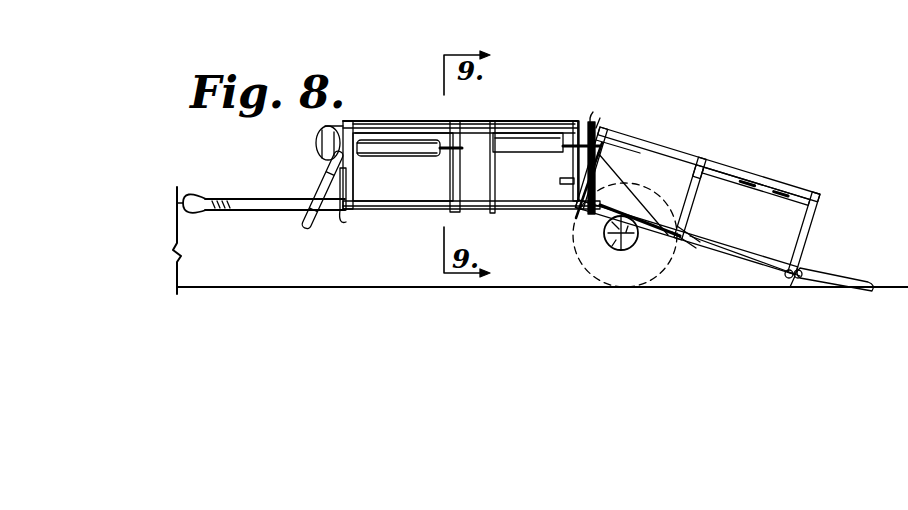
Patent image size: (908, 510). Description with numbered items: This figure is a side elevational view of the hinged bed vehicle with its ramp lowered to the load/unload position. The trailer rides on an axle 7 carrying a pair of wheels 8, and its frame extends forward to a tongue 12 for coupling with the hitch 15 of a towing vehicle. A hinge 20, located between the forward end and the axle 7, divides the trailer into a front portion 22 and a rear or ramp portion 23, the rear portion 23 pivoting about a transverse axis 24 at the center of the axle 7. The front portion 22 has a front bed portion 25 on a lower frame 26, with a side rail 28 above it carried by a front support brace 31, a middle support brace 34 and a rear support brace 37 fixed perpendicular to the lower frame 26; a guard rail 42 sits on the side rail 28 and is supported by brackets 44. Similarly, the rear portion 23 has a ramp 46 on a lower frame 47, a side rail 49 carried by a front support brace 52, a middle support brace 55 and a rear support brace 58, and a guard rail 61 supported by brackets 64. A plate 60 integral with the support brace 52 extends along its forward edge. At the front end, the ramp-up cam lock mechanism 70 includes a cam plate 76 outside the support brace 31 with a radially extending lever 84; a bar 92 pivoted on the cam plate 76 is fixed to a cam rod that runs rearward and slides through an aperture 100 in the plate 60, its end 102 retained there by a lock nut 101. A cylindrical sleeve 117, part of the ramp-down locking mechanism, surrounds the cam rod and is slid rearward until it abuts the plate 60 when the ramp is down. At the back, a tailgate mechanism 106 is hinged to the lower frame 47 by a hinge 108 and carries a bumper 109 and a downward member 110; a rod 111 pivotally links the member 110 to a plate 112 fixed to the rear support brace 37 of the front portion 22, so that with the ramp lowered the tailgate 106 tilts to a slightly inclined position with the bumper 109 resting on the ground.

The axle 7 is at (604, 234).
The wheels 8 is at (614, 250).
The tongue 12 is at (248, 203).
The hitch 15 is at (188, 217).
The hinge 20 is at (572, 218).
The front portion 22 is at (493, 84).
The rear or ramp portion 23 is at (727, 128).
The transverse axis 24 is at (626, 250).
The front bed portion 25 is at (353, 200).
The lower frame 26 is at (378, 209).
The side rail 28 is at (400, 122).
The front support brace 31 is at (342, 215).
The middle support brace 34 is at (455, 213).
The rear support brace 37 is at (562, 185).
The guard rail 42 is at (493, 122).
The brackets 44 is at (353, 160).
The rear bed portion or ramp 46 is at (758, 253).
The lower frame 47 is at (724, 253).
The side rail 49 is at (706, 172).
The front support brace 52 is at (602, 181).
The middle support brace 55 is at (680, 244).
The rear support brace 58 is at (818, 218).
The plate 60 is at (597, 128).
The guard rail 61 is at (748, 170).
The brackets 64 is at (701, 208).
The ramp-up cam lock mechanism 70 is at (295, 139).
The cam plate 76 is at (317, 150).
The lever 84 is at (298, 232).
The bar 92 is at (407, 150).
The aperture 100 is at (590, 137).
The lock nut 101 is at (613, 132).
The end of cam rod 102 is at (609, 180).
The tailgate mechanism 106 is at (838, 273).
The hinge 108 is at (803, 272).
The bumper 109 is at (867, 288).
The member 110 is at (783, 283).
The rod 111 is at (640, 188).
The plate 112 is at (556, 152).
The cylindrical sleeve 117 is at (505, 152).